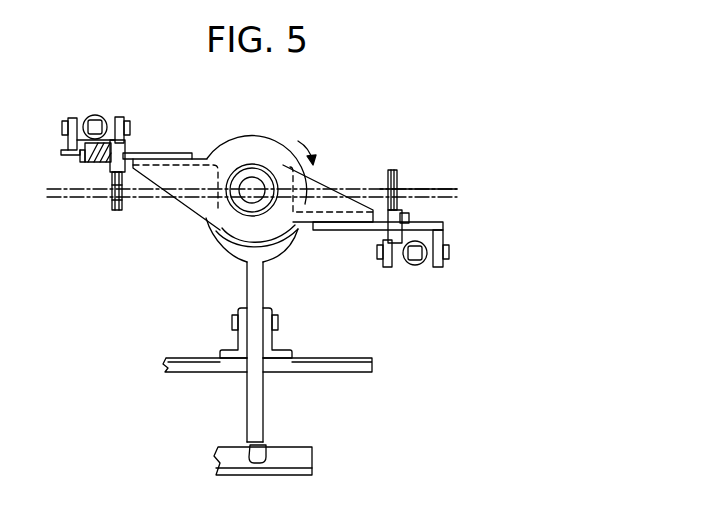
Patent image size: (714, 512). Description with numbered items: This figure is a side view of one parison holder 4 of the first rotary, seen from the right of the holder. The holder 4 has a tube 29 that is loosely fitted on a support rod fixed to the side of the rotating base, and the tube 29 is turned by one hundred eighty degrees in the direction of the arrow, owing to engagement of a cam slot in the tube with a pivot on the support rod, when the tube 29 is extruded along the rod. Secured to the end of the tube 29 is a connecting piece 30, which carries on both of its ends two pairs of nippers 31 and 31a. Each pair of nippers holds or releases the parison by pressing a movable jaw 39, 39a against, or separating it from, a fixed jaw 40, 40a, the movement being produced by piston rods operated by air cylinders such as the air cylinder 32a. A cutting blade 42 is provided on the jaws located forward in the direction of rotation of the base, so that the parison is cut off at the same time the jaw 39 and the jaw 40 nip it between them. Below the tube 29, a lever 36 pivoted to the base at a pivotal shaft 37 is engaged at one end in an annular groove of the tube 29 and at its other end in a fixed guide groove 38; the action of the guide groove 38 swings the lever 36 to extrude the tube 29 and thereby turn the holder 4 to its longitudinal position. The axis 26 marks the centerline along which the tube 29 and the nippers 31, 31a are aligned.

The parison holder 4 is at (342, 105).
The axis 26 is at (437, 188).
The tube 29 is at (272, 130).
The connecting piece 30 is at (195, 170).
The nippers 31 is at (403, 220).
The nippers 31a is at (119, 151).
The air cylinder 32a is at (93, 114).
The lever 36 is at (262, 287).
The pivotal shaft 37 is at (279, 322).
The guide groove 38 is at (303, 455).
The movable jaw 39 is at (395, 235).
The movable jaw 39a is at (110, 166).
The fixed jaw 40 is at (391, 170).
The fixed jaw 40a is at (114, 203).
The cutting blade 42 is at (124, 203).